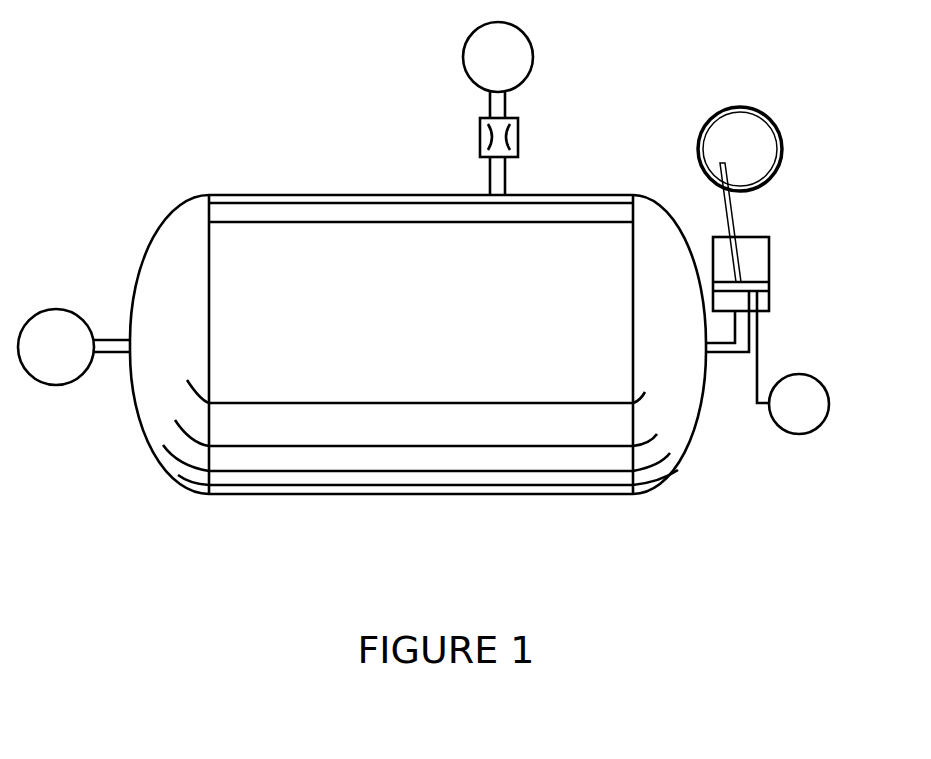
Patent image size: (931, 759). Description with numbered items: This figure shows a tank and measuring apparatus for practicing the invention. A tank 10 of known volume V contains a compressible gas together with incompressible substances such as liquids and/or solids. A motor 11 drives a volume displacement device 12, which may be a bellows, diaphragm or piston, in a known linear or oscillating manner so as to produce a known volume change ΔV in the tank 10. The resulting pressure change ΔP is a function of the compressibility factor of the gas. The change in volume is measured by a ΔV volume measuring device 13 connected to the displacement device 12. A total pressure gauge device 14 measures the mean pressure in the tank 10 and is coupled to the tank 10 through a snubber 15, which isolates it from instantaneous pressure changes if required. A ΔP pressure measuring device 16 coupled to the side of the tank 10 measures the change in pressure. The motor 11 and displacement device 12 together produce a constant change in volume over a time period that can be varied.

The tank 10 is at (461, 504).
The motor 11 is at (758, 94).
The volume displacement device 12 is at (781, 281).
The ΔV volume measuring device 13 is at (770, 437).
The total pressure gauge device 14 is at (450, 52).
The snubber 15 is at (468, 134).
The ΔP pressure measuring device 16 is at (68, 400).